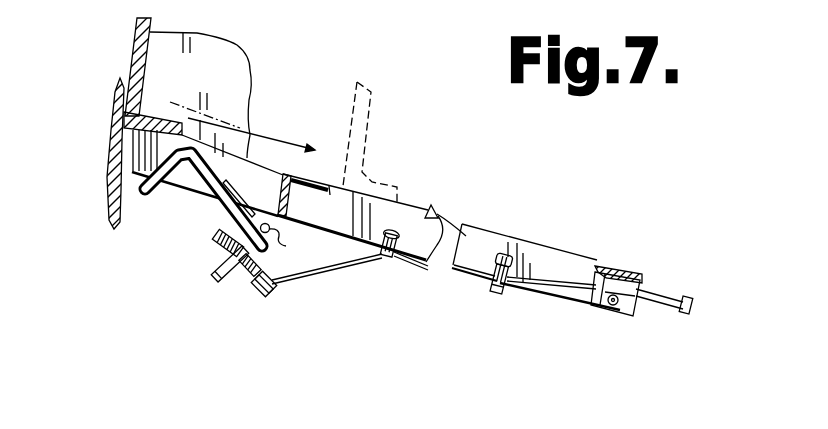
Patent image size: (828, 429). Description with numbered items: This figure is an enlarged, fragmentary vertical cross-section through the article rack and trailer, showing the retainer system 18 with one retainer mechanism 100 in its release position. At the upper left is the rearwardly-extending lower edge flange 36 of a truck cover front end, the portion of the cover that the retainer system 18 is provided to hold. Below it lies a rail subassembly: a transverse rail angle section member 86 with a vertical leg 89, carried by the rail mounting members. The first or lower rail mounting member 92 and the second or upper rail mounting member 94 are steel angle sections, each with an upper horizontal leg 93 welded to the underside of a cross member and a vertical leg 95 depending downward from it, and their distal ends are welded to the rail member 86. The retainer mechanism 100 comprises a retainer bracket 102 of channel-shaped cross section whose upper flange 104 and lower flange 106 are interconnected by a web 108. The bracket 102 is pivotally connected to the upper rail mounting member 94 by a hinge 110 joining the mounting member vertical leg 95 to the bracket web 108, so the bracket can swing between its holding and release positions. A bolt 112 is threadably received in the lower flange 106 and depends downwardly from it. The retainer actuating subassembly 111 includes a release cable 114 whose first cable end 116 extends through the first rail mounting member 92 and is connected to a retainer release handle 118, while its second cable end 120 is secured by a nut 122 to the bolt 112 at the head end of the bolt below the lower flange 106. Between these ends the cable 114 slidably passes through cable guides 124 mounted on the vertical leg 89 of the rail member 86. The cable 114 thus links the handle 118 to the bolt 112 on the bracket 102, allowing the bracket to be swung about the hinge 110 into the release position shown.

The retainer system 18 is at (500, 150).
The lower edge flange 36 is at (165, 110).
The rail angle section member 86 is at (547, 300).
The vertical leg 89 is at (548, 258).
The first or lower rail mounting member 92 is at (604, 262).
The upper horizontal leg 93 is at (618, 272).
The second or upper rail mounting member 94 is at (309, 176).
The vertical leg 95 is at (294, 203).
The retainer mechanism 100 is at (122, 253).
The retainer bracket 102 is at (206, 176).
The upper flange 104 is at (123, 175).
The lower flange 106 is at (214, 272).
The web 108 is at (208, 186).
The hinge 110 is at (281, 240).
The retainer actuating subassembly 111 is at (454, 288).
The bolt 112 is at (250, 280).
The release cable 114 is at (360, 262).
The first cable end 116 is at (661, 306).
The retainer release handle 118 is at (688, 301).
The second cable end 120 is at (309, 274).
The nut 122 is at (258, 287).
The cable guides 124 is at (431, 206).